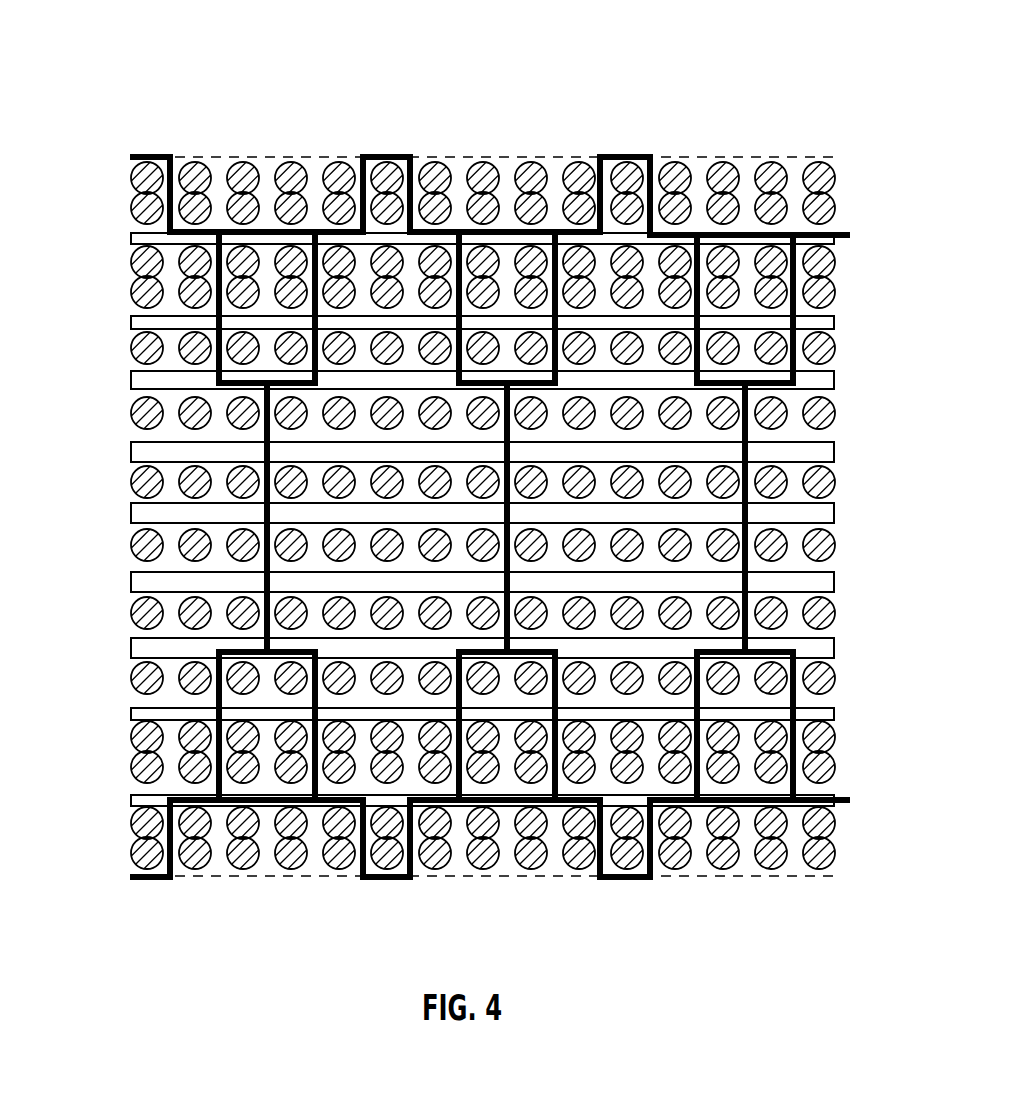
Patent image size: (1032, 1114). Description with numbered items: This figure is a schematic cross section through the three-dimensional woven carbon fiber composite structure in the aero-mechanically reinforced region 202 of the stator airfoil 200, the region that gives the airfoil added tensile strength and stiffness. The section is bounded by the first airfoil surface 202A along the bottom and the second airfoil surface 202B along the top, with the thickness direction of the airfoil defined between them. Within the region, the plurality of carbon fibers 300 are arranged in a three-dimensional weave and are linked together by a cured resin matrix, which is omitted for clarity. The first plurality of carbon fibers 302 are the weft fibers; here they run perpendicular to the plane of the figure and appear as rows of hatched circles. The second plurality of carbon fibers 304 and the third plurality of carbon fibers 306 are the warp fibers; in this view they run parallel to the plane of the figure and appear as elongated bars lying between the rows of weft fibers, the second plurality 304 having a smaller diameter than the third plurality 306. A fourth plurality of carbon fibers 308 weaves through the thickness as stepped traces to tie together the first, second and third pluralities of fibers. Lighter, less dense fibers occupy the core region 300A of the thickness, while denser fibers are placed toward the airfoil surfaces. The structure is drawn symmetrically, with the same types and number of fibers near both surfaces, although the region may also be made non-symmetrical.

The stator airfoil 200 is at (257, 35).
The aero-mechanically reinforced region 202 is at (834, 126).
The first airfoil surface 202A is at (556, 888).
The second airfoil surface 202B is at (257, 147).
The plurality of carbon fibers 300 is at (843, 317).
The core region 300A is at (126, 575).
The first plurality of carbon fibers 302 is at (126, 177).
The second plurality of carbon fibers 304 is at (126, 238).
The third plurality of carbon fibers 306 is at (126, 374).
The fourth plurality of carbon fibers 308 is at (397, 155).